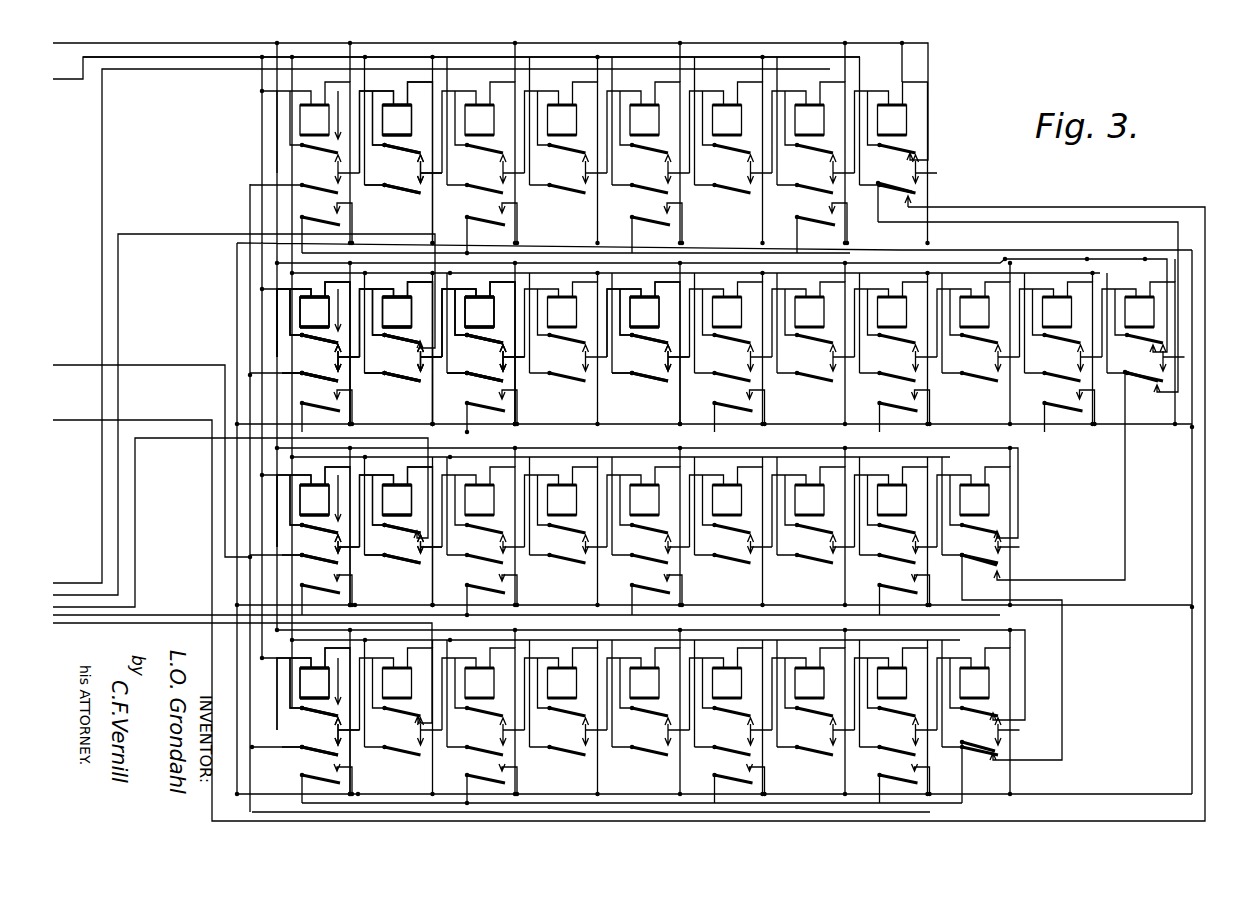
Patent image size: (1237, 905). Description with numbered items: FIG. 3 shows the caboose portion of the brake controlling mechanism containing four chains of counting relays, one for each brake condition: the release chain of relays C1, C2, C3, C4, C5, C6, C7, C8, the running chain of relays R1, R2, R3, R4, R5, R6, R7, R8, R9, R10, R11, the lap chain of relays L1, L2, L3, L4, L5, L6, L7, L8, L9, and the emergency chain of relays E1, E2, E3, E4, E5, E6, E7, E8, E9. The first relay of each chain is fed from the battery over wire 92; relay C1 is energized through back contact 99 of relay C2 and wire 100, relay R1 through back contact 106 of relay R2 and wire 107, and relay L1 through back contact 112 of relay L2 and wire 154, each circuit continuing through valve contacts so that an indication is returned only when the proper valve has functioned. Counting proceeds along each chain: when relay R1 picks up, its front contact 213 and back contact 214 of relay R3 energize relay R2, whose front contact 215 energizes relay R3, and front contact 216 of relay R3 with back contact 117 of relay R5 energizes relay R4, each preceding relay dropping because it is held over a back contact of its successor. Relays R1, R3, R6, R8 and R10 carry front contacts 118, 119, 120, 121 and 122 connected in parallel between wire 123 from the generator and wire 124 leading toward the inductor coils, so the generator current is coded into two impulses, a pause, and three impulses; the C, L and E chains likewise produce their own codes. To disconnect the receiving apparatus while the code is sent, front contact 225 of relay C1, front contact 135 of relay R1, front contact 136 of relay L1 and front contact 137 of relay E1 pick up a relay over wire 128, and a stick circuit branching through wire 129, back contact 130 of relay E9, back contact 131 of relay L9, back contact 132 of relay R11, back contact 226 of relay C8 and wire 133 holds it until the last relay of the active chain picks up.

The wire 92 is at (78, 81).
The wire 100 is at (103, 152).
The wire 107 is at (162, 234).
The wire 128 is at (148, 366).
The wire 154 is at (136, 534).
The wire 124 is at (164, 633).
The wire 123 is at (90, 634).
The wire 133 is at (1006, 197).
The wire 129 is at (262, 810).
The front contact 225 is at (336, 178).
The back contact 99 is at (408, 165).
The back contact 226 is at (890, 199).
The front contact 213 is at (338, 351).
The back contact 106 is at (420, 350).
The back contact 214 is at (502, 352).
The back contact 117 is at (660, 350).
The front contact 118 is at (322, 407).
The front contact 135 is at (348, 380).
The front contact 215 is at (420, 382).
The front contact 119 is at (487, 407).
The front contact 216 is at (506, 384).
The front contact 120 is at (727, 407).
The front contact 121 is at (892, 407).
The front contact 122 is at (1062, 396).
The back contact 132 is at (1158, 386).
The front contact 136 is at (336, 546).
The back contact 112 is at (420, 536).
The back contact 131 is at (995, 572).
The front contact 137 is at (336, 734).
The back contact 130 is at (1000, 744).
The counting relay C1 is at (311, 101).
The counting relay C2 is at (393, 101).
The counting relay C3 is at (476, 101).
The counting relay C4 is at (558, 101).
The counting relay C5 is at (641, 101).
The counting relay C6 is at (723, 101).
The counting relay C7 is at (806, 101).
The counting relay C8 is at (888, 101).
The counting relay R1 is at (318, 348).
The counting relay R2 is at (401, 348).
The counting relay R3 is at (483, 348).
The counting relay R4 is at (566, 348).
The counting relay R5 is at (648, 348).
The counting relay R6 is at (731, 348).
The counting relay R7 is at (813, 348).
The counting relay R8 is at (896, 348).
The counting relay R9 is at (978, 348).
The counting relay R10 is at (1061, 348).
The counting relay R11 is at (1143, 348).
The counting relay L1 is at (318, 531).
The counting relay L2 is at (401, 531).
The counting relay L3 is at (483, 531).
The counting relay L4 is at (566, 531).
The counting relay L5 is at (648, 531).
The counting relay L6 is at (731, 531).
The counting relay L7 is at (813, 531).
The counting relay L8 is at (896, 531).
The counting relay L9 is at (978, 531).
The counting relay E1 is at (318, 717).
The counting relay E2 is at (401, 717).
The counting relay E3 is at (483, 717).
The counting relay E4 is at (566, 717).
The counting relay E5 is at (648, 717).
The counting relay E6 is at (731, 717).
The counting relay E7 is at (813, 717).
The counting relay E8 is at (896, 717).
The counting relay E9 is at (978, 717).